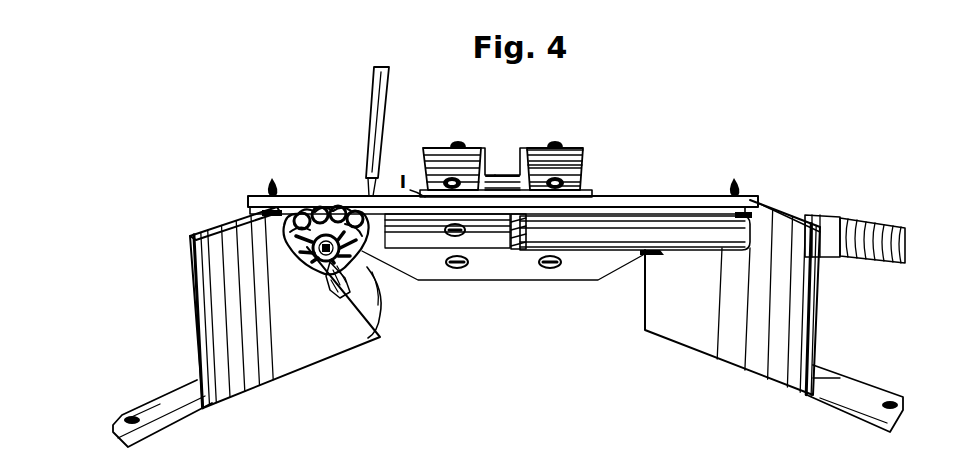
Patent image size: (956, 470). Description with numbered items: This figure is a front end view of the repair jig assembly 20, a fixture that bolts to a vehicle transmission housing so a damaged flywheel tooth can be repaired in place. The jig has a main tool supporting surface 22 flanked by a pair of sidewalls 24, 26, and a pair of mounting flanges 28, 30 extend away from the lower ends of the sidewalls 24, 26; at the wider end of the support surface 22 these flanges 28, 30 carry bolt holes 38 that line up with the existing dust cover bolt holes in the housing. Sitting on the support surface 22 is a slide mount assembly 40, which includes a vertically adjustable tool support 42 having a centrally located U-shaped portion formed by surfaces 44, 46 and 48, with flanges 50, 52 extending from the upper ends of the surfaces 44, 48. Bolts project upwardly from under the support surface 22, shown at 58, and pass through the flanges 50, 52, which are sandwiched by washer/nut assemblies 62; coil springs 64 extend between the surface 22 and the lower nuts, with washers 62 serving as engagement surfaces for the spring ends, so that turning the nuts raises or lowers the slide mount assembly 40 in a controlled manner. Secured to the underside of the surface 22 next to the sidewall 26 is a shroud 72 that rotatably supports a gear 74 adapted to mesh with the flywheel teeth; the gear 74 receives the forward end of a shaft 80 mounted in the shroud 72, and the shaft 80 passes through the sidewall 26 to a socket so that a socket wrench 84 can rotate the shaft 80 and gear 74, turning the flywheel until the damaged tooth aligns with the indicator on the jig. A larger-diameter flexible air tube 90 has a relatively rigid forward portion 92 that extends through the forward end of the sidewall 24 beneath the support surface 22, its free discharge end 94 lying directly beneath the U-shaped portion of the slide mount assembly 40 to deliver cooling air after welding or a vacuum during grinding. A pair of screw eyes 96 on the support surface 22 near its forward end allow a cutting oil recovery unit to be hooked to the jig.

The repair jig assembly 20 is at (162, 131).
The main tool supporting surface 22 is at (640, 197).
The sidewall 24 is at (800, 300).
The sidewall 26 is at (200, 288).
The mounting flange 28 is at (823, 373).
The mounting flange 30 is at (163, 395).
The bolt holes 38 is at (130, 413).
The slide mount assembly 40 is at (453, 116).
The vertically adjustable tool support 42 is at (578, 142).
The surface of U-shaped portion 44 is at (491, 172).
The surface of U-shaped portion 46 is at (504, 170).
The surface of U-shaped portion 48 is at (514, 160).
The flange 50 is at (433, 143).
The flange 52 is at (581, 150).
The bolt location under support surface 58 is at (446, 234).
The washer/nut assembly (washers) 62 is at (584, 166).
The coil springs 64 is at (578, 192).
The shroud 72 is at (306, 207).
The gear 74 is at (325, 272).
The shaft 80 is at (338, 306).
The socket wrench 84 is at (363, 127).
The flexible air tube 90 is at (862, 220).
The rigid forward portion 92 is at (690, 250).
The free discharge end 94 is at (508, 247).
The screw eyes 96 is at (271, 177).